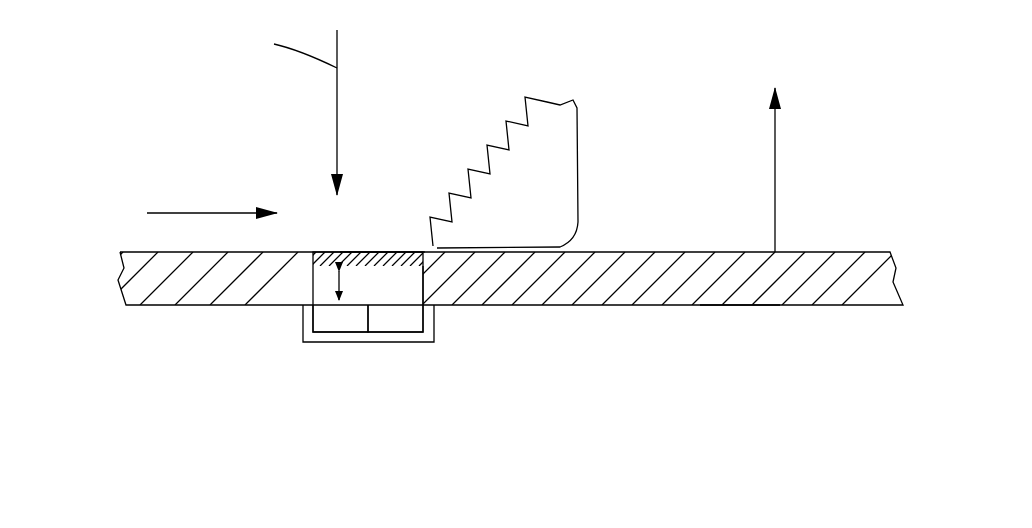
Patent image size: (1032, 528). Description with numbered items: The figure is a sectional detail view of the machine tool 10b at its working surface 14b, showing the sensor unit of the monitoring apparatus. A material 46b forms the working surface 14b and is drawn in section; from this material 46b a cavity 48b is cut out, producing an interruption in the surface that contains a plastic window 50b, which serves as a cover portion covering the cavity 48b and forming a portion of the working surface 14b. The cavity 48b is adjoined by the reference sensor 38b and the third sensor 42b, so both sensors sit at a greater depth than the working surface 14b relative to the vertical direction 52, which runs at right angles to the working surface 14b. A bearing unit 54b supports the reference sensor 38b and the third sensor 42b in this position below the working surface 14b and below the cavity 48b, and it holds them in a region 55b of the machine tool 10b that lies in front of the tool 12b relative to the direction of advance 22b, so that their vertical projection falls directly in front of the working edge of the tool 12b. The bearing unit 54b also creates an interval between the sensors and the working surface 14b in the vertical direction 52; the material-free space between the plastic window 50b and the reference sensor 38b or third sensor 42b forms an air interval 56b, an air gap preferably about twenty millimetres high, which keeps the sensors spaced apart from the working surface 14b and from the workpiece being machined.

The machine tool 10b is at (132, 160).
The tool 12b is at (546, 130).
The working surface 14b is at (674, 250).
The direction of advance 22b is at (211, 178).
The reference sensor 38b is at (336, 336).
The third sensor 42b is at (401, 336).
The material 46b is at (739, 307).
The cavity 48b is at (426, 291).
The plastic window 50b is at (369, 250).
The vertical direction 52 is at (777, 170).
The bearing unit 54b is at (361, 345).
The region 55b is at (403, 229).
The air interval 56b is at (336, 291).